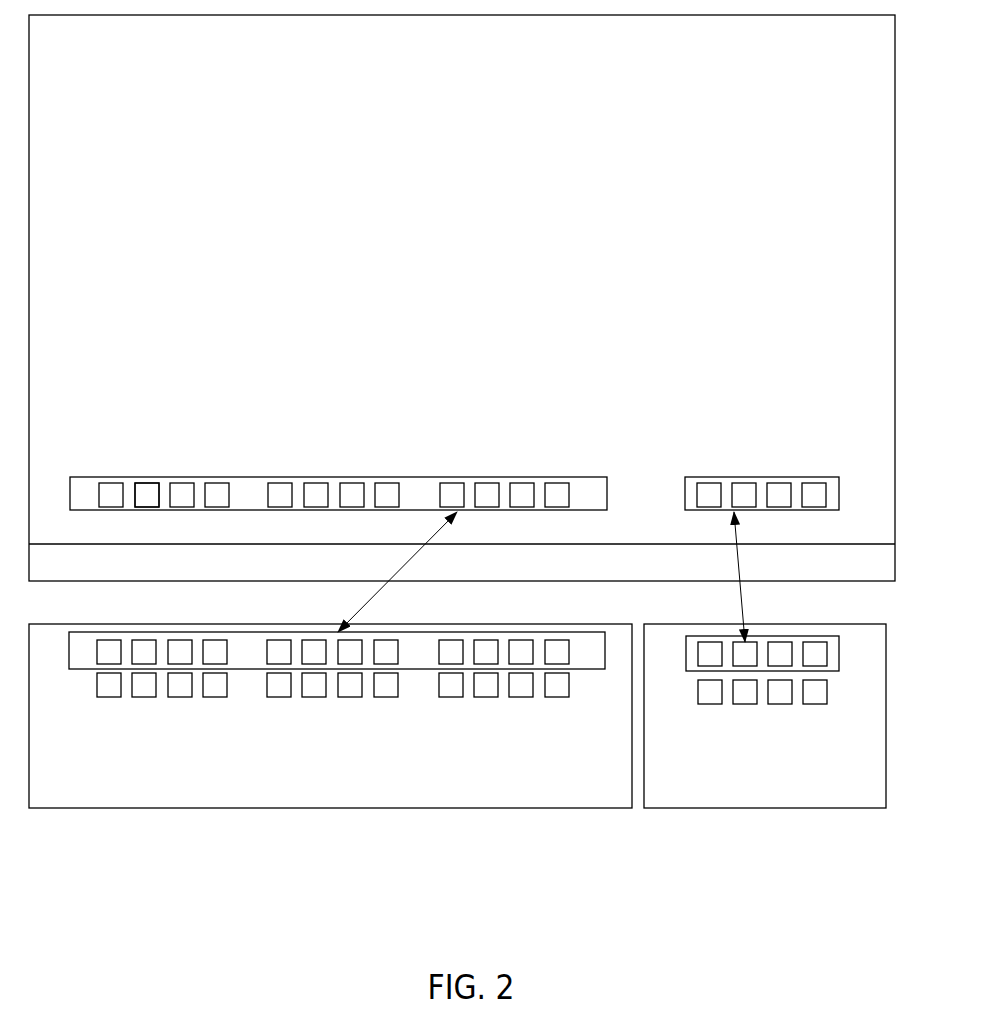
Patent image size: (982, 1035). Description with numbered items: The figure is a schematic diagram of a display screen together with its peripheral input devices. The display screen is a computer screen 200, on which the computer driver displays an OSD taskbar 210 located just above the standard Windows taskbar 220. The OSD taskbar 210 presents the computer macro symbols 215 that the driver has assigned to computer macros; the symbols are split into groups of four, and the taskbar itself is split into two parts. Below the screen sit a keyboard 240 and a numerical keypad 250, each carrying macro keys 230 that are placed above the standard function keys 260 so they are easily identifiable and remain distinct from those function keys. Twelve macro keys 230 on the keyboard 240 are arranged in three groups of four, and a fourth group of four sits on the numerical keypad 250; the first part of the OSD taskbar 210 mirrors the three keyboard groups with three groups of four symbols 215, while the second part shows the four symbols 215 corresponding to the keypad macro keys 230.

The computer screen 200 is at (462, 298).
The OSD taskbar 210 is at (730, 475).
The computer macro symbols 215 is at (144, 482).
The standard Windows taskbar 220 is at (462, 561).
The macro keys 230 is at (68, 648).
The keyboard 240 is at (330, 716).
The numerical keypad 250 is at (765, 716).
The standard function keys 260 is at (696, 692).